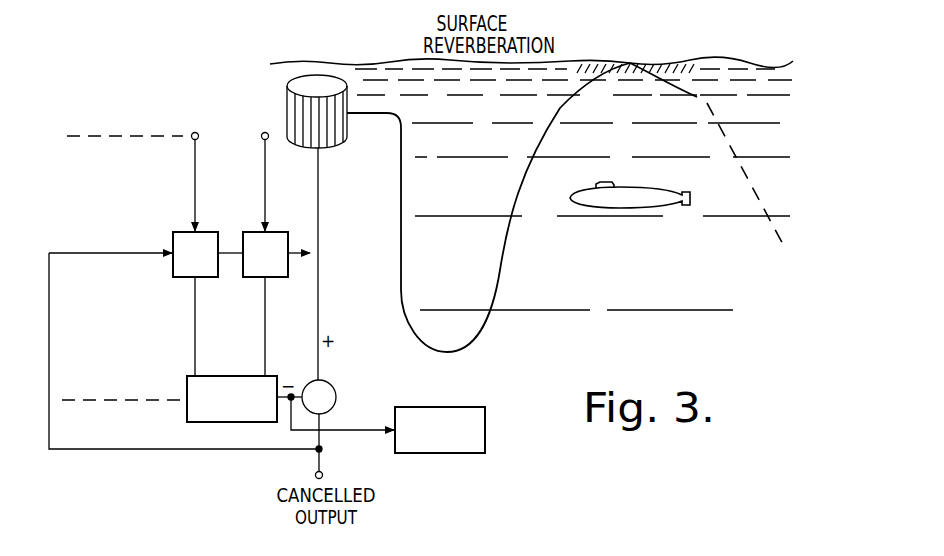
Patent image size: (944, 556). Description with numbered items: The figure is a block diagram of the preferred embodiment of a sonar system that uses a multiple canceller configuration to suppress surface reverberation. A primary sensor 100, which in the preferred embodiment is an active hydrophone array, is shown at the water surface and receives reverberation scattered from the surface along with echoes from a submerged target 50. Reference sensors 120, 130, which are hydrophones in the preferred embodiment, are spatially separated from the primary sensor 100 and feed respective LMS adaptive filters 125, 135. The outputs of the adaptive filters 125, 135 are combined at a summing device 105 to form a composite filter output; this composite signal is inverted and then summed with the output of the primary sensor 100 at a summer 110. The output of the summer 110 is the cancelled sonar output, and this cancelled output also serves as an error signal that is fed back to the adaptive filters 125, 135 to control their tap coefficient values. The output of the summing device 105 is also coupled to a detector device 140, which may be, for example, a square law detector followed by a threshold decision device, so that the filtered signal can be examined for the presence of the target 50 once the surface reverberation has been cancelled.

The submarine target 50 is at (618, 188).
The primary sensor 100 is at (291, 104).
The summing device 105 is at (187, 388).
The summer 110 is at (334, 391).
The reference sensor 120 is at (261, 136).
The LMS adaptive filter 125 is at (250, 231).
The reference sensor 130 is at (195, 131).
The LMS adaptive filter 135 is at (174, 230).
The detector device 140 is at (485, 408).